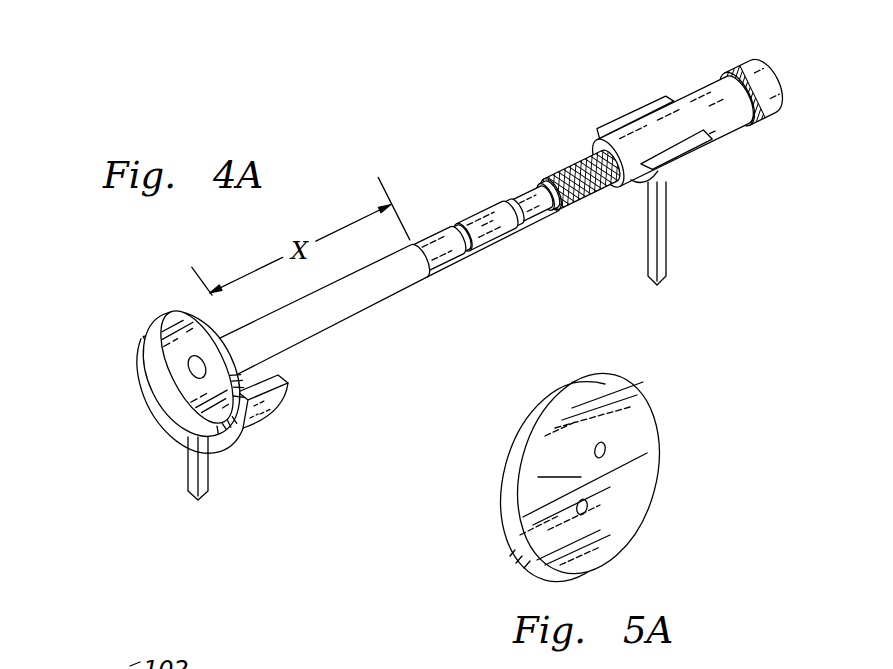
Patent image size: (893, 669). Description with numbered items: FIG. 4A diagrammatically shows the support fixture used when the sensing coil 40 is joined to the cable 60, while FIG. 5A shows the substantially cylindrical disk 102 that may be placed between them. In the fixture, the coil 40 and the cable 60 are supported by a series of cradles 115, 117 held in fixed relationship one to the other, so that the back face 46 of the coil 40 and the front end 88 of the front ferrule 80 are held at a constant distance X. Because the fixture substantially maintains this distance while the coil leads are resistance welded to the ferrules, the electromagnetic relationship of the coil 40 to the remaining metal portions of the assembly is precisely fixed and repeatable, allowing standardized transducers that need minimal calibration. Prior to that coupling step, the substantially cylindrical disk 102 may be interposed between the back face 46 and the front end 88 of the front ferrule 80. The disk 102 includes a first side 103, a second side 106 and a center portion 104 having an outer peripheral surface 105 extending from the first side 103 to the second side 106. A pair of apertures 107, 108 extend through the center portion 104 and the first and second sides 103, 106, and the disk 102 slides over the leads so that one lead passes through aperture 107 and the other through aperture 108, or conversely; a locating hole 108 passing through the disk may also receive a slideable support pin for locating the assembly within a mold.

In FIG. 4A, the sensing coil 40 is at (305, 340).
In FIG. 4A, the back face 46 is at (187, 311).
In FIG. 4A, the cradle 115 is at (170, 400).
In FIG. 4A, the cable 60 is at (702, 142).
In FIG. 4A, the cradle 117 is at (697, 162).
In FIG. 4A, the front end 88 is at (422, 240).
In FIG. 4A, the front ferrule 80 is at (437, 243).
In FIG. 5A, the substantially cylindrical disk 102 is at (648, 454).
In FIG. 5A, the first side 103 is at (561, 464).
In FIG. 5A, the center portion 104 is at (603, 530).
In FIG. 5A, the outer peripheral surface 105 is at (572, 383).
In FIG. 5A, the second side 106 is at (548, 387).
In FIG. 5A, the aperture 107 is at (595, 443).
In FIG. 5A, the aperture 108 is at (577, 513).